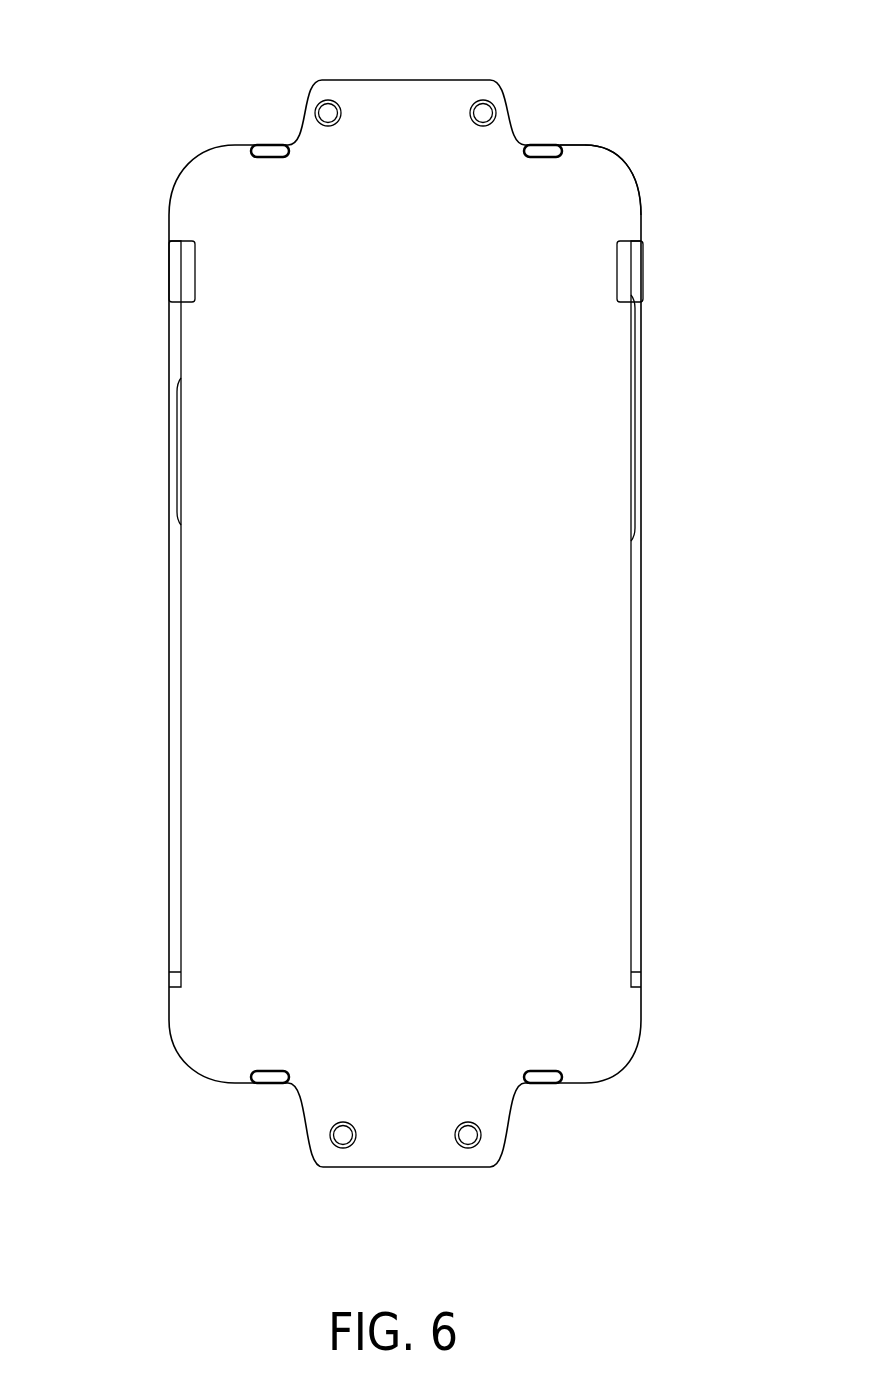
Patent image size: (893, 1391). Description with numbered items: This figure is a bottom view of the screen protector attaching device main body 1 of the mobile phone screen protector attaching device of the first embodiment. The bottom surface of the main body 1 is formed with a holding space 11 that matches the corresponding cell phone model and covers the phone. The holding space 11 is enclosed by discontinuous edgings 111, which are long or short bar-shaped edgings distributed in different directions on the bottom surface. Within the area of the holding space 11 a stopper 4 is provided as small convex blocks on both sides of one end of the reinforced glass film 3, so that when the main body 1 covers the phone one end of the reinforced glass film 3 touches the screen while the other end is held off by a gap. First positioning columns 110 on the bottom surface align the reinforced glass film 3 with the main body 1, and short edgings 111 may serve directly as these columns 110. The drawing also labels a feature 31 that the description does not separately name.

The screen protector attaching device main body 1 is at (454, 623).
The holding space 11 is at (565, 308).
The reinforced glass film 3 is at (606, 192).
The frame edge 31 is at (552, 170).
The stopper 4 is at (188, 262).
The first positioning columns 110 is at (330, 100).
The edgings 111 is at (275, 152).